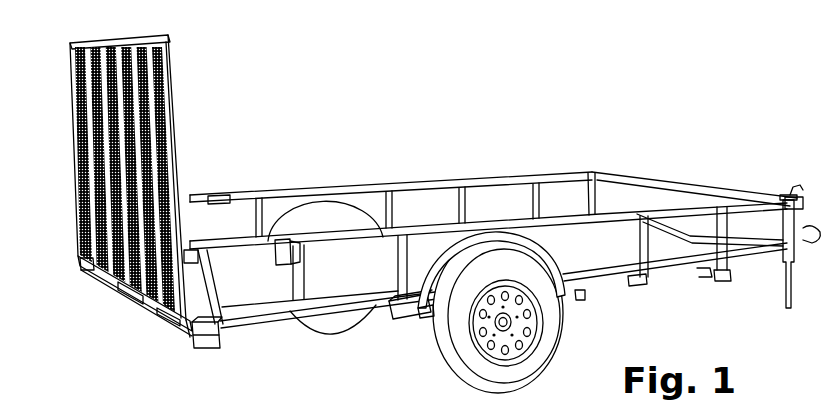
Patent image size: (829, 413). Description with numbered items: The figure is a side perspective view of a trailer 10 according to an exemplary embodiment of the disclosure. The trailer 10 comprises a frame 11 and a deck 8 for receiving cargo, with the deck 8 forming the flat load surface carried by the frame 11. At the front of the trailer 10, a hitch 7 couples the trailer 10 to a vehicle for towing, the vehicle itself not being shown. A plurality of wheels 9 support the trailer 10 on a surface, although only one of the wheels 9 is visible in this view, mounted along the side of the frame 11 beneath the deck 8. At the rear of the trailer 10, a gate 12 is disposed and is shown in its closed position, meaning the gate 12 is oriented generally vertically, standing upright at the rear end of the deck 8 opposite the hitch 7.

The trailer 10 is at (466, 78).
The gate 12 is at (69, 40).
The frame 11 is at (233, 195).
The deck 8 is at (247, 289).
The wheel 9 is at (467, 337).
The hitch 7 is at (797, 247).